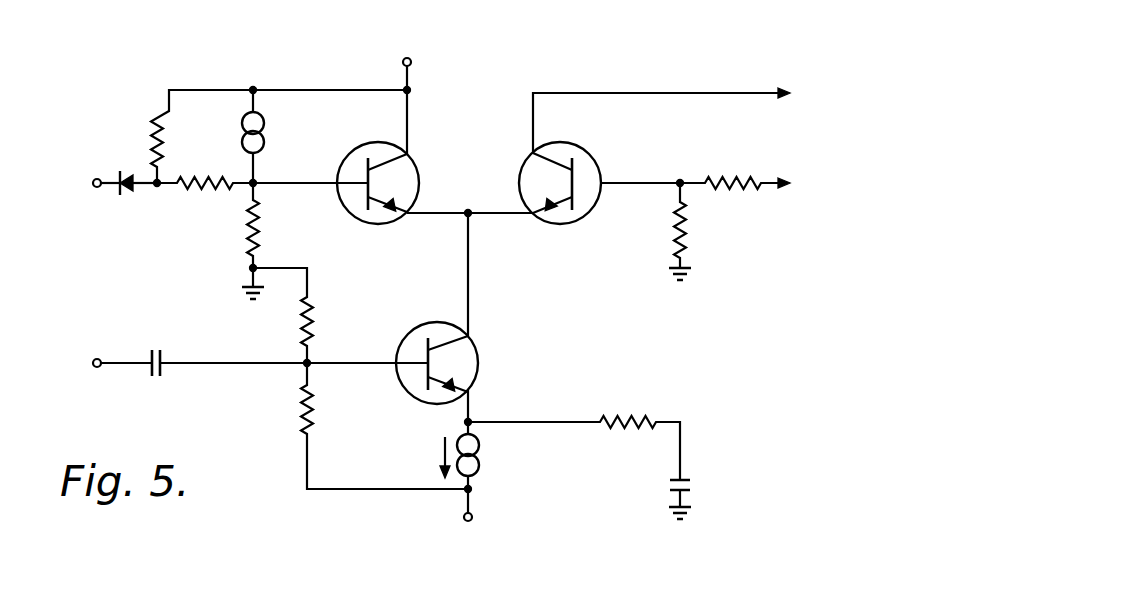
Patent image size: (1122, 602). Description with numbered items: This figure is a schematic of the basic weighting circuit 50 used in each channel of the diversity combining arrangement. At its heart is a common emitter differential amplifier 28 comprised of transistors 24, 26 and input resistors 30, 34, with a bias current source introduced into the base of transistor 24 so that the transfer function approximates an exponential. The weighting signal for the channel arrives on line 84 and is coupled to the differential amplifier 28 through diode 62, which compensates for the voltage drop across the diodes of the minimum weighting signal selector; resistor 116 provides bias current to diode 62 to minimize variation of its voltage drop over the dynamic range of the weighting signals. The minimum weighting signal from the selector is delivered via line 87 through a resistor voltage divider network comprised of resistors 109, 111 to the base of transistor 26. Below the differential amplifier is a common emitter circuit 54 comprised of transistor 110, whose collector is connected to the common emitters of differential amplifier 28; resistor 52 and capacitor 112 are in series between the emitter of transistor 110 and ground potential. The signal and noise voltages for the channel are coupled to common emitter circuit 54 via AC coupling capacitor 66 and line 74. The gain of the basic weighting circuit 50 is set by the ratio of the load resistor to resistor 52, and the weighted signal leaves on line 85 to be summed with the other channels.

The transistor 24 is at (377, 142).
The transistor 26 is at (590, 148).
The common emitter differential amplifier 28 is at (478, 186).
The resistor 30 is at (222, 194).
The resistor 34 is at (246, 238).
The basic weighting circuit 50 is at (695, 70).
The resistor 52 is at (626, 428).
The common emitter circuit 54 is at (513, 278).
The diode 62 is at (128, 196).
The AC coupling capacitor 66 is at (164, 372).
The line 74 is at (118, 368).
The line 84 is at (118, 178).
The line 85 is at (578, 92).
The line 87 is at (764, 178).
The resistor 109 is at (672, 236).
The transistor 110 is at (480, 348).
The resistor 111 is at (733, 197).
The capacitor 112 is at (668, 482).
The resistor 116 is at (150, 142).